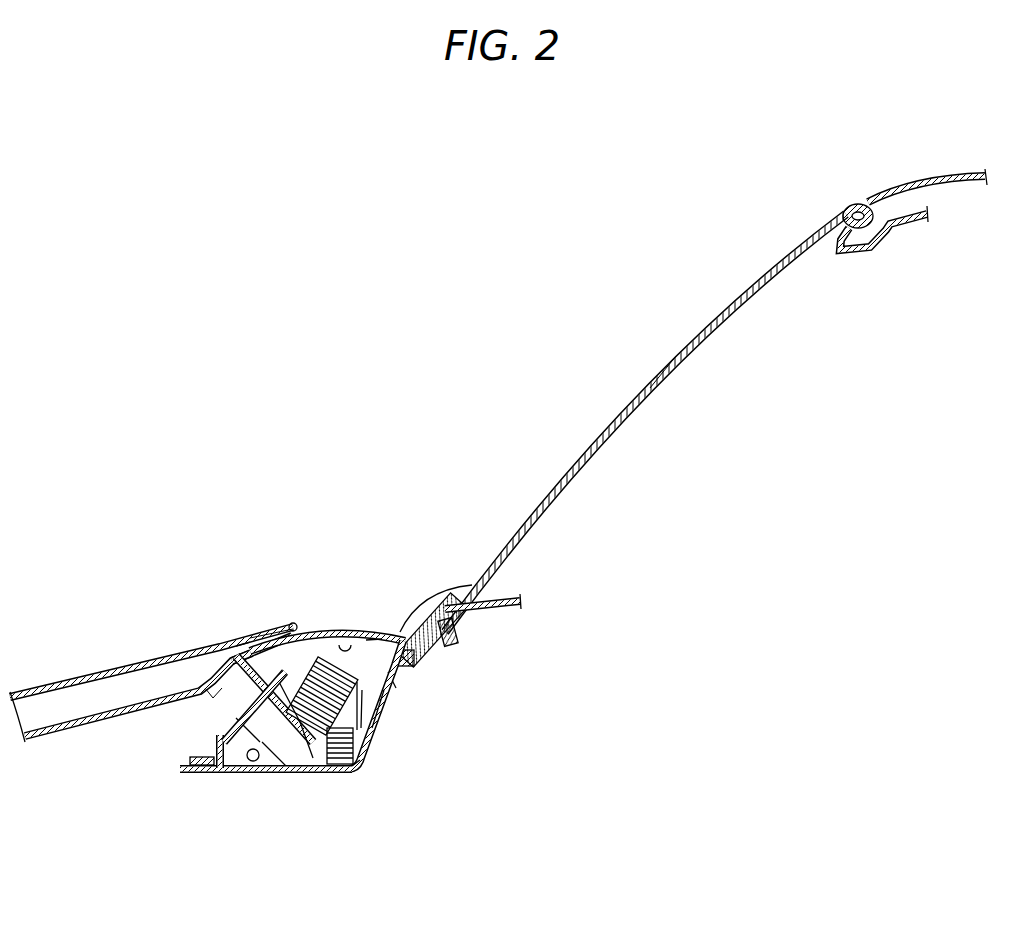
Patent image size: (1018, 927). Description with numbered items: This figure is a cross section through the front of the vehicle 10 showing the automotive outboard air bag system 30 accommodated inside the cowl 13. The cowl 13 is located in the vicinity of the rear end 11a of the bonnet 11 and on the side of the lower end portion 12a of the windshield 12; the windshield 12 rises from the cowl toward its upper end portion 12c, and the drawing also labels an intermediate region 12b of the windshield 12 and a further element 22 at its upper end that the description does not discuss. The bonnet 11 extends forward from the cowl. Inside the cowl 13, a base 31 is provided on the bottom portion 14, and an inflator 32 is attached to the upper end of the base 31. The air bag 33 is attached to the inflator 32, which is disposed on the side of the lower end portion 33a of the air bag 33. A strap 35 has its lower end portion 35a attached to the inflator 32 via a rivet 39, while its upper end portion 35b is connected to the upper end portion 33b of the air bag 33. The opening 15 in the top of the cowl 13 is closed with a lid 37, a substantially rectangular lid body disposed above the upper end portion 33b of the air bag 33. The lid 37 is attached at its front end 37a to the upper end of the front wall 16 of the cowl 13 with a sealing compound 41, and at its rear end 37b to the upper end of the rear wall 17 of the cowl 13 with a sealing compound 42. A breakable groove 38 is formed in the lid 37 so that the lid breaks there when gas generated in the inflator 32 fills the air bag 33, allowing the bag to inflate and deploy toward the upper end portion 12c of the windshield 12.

The vehicle 10 is at (757, 186).
The bonnet 11 is at (97, 672).
The rear end of bonnet 11a is at (263, 630).
The windshield 12 is at (727, 308).
The lower end portion of windshield 12a is at (470, 627).
The panel intermediate portion 12b is at (663, 372).
The upper end portion of windshield 12c is at (822, 233).
The cowl 13 is at (230, 714).
The bottom portion of cowl 14 is at (258, 773).
The opening in cowl 15 is at (373, 640).
The front wall of cowl 16 is at (193, 652).
The rear wall of cowl 17 is at (393, 680).
The door inner panel 22 is at (942, 177).
The automotive outboard air bag system 30 is at (327, 632).
The base 31 is at (286, 775).
The inflator 32 is at (193, 650).
The air bag 33 is at (380, 717).
The lower end portion of air bag 33a is at (358, 773).
The upper end portion of air bag 33b is at (388, 697).
The strap 35 is at (365, 727).
The lower end portion of strap 35a is at (307, 775).
The upper end portion of strap 35b is at (412, 661).
The lid 37 is at (397, 640).
The front end of lid 37a is at (277, 640).
The rear end of lid 37b is at (440, 610).
The breakable groove 38 is at (356, 645).
The rivet 39 is at (318, 775).
The sealing compound 41 is at (243, 640).
The sealing compound 42 is at (455, 590).